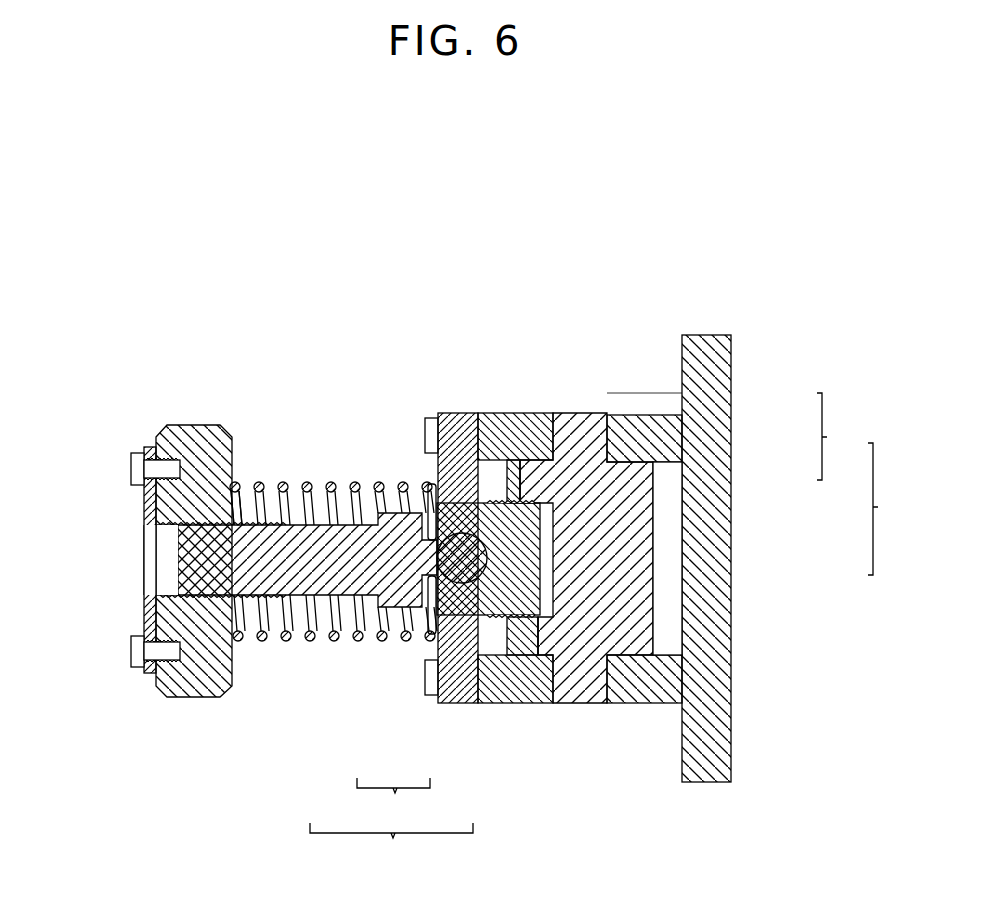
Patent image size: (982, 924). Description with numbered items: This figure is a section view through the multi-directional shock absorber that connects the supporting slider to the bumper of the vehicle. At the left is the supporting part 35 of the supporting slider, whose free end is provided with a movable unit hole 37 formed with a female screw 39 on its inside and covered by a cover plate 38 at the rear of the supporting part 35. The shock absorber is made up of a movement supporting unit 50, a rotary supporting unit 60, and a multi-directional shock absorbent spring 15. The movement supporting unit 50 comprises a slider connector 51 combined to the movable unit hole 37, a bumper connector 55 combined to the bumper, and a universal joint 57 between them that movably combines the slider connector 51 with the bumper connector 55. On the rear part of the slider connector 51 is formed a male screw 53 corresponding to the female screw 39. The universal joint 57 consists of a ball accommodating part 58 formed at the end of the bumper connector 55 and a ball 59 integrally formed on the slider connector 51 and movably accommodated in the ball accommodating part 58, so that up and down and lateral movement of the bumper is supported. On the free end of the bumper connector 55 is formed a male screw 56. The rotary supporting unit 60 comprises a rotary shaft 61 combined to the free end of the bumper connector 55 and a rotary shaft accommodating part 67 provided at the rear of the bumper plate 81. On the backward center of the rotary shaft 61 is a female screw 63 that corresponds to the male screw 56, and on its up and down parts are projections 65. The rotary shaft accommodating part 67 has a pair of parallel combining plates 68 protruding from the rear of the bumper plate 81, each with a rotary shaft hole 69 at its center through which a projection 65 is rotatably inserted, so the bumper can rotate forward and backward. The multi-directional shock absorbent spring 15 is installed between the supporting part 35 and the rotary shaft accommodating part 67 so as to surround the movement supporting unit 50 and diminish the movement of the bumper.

The multi-directional shock absorbent spring 15 is at (358, 484).
The supporting part 35 is at (190, 426).
The movable unit hole 37 is at (145, 592).
The cover plate 38 is at (143, 502).
The female screw 39 is at (145, 548).
The movement supporting unit 50 is at (391, 844).
The slider connector 51 is at (333, 567).
The male screw 53 is at (260, 486).
The bumper connector 55 is at (498, 618).
The male screw 56 is at (494, 498).
The universal joint 57 is at (393, 801).
The ball accommodating part 58 is at (452, 612).
The ball 59 is at (427, 632).
The rotary supporting unit 60 is at (890, 509).
The rotary shaft 61 is at (657, 578).
The female screw 63 is at (520, 480).
The projection 65 is at (585, 703).
The rotary shaft accommodating part 67 is at (838, 436).
The combining plate 68 is at (663, 465).
The rotary shaft hole 69 is at (600, 415).
The bumper plate 81 is at (733, 745).